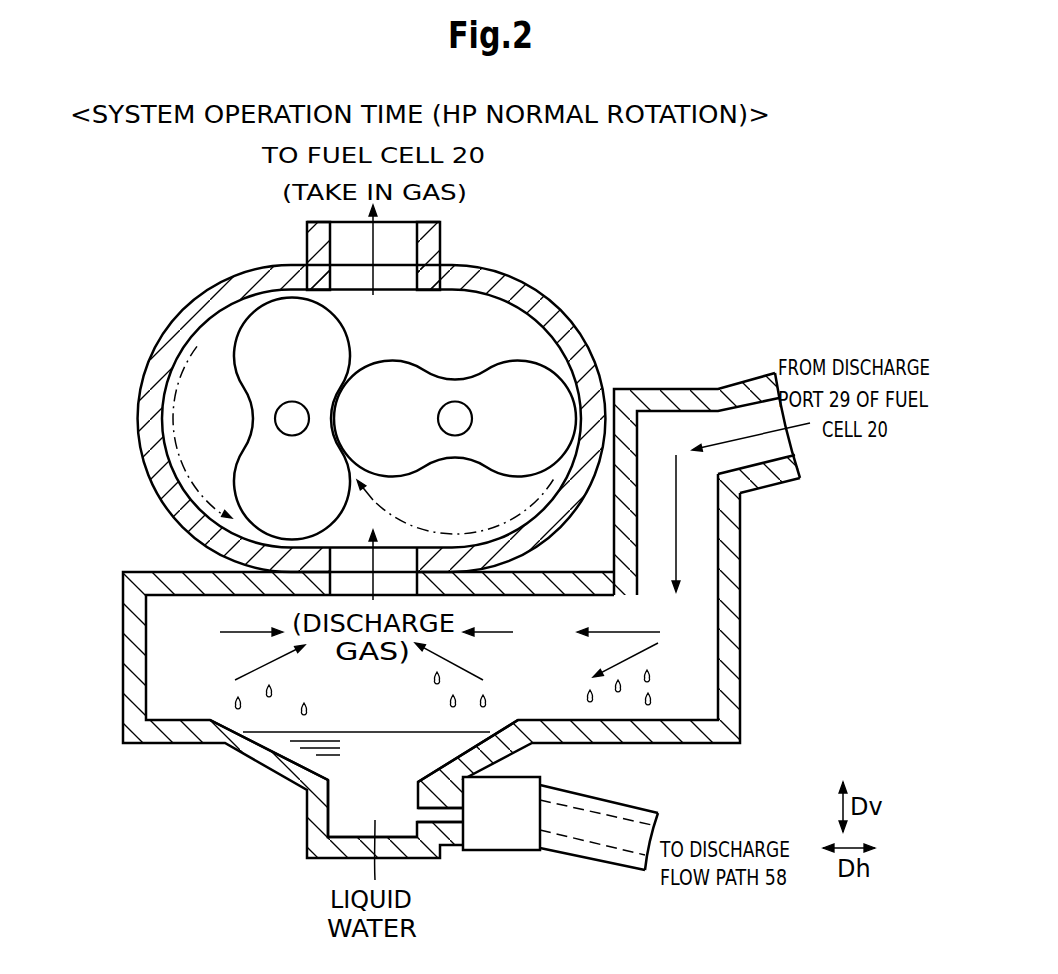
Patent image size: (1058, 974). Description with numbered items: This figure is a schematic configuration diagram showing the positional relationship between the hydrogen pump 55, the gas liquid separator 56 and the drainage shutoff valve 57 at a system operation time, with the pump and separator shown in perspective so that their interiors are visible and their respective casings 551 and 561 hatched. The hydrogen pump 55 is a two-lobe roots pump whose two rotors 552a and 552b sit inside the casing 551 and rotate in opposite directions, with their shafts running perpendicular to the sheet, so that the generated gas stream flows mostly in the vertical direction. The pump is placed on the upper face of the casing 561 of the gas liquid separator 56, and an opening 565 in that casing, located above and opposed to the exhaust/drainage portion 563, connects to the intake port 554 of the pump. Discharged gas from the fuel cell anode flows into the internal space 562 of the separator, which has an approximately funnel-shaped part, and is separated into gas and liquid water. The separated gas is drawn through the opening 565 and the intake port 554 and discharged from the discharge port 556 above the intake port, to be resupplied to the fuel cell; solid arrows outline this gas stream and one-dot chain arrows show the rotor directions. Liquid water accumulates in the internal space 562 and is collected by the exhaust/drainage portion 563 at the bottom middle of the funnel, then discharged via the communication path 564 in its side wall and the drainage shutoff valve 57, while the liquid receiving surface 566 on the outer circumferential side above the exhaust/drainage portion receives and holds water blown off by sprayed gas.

The hydrogen pump 55 is at (367, 388).
The casing 551 is at (200, 300).
The rotor 552a is at (240, 348).
The rotor 552b is at (555, 362).
The intake port 554 is at (333, 545).
The discharge port 556 is at (340, 280).
The opening 565 is at (335, 586).
The gas liquid separator 56 is at (680, 388).
The casing 561 is at (740, 727).
The internal space 562 is at (197, 628).
The liquid receiving surface 566 is at (188, 720).
The exhaust/drainage portion 563 is at (325, 820).
The communication path 564 is at (438, 818).
The drainage shutoff valve 57 is at (529, 857).